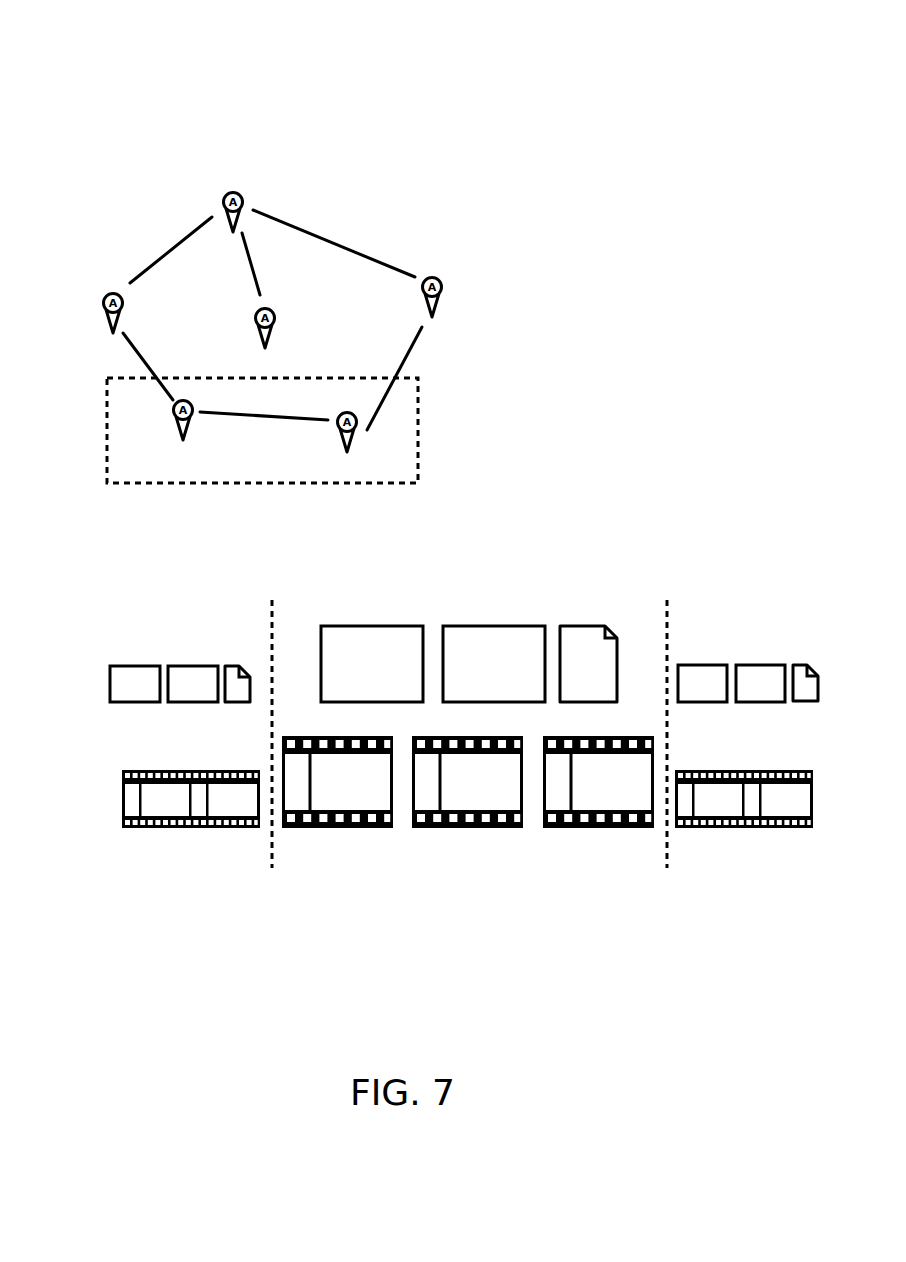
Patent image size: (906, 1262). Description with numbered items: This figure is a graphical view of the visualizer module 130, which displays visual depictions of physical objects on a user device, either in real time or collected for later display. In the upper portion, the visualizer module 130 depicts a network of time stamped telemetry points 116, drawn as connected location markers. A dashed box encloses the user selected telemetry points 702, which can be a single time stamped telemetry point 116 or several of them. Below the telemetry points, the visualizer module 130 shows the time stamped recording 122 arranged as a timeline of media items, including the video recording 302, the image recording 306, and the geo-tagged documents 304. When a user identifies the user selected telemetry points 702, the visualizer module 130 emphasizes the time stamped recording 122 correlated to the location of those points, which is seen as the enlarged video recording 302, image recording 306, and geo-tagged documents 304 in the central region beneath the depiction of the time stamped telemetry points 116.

The visualizer module 130 is at (685, 72).
The time stamped telemetry point 116 is at (240, 188).
The user selected telemetry points 702 is at (434, 398).
The time stamped recording 122 is at (40, 756).
The image recording 306 is at (493, 670).
The geo-tagged documents 304 is at (592, 678).
The video recording 302 is at (715, 795).